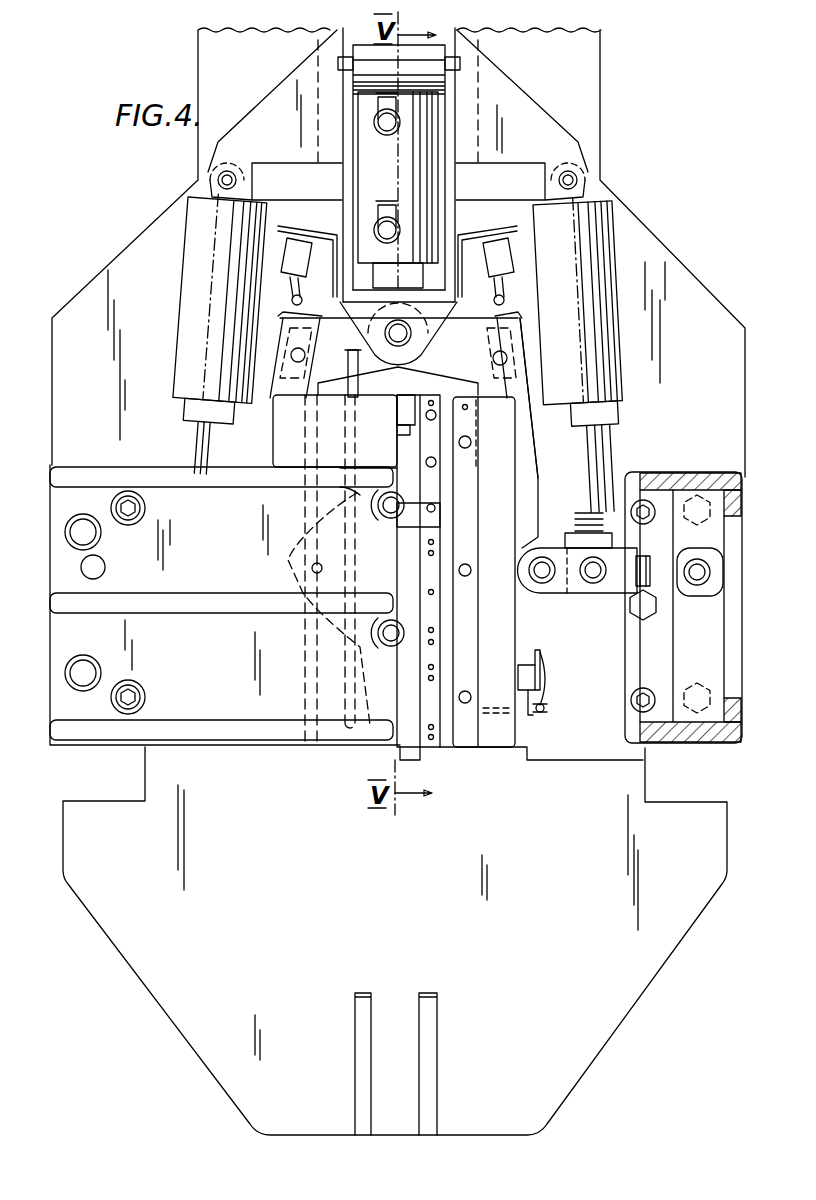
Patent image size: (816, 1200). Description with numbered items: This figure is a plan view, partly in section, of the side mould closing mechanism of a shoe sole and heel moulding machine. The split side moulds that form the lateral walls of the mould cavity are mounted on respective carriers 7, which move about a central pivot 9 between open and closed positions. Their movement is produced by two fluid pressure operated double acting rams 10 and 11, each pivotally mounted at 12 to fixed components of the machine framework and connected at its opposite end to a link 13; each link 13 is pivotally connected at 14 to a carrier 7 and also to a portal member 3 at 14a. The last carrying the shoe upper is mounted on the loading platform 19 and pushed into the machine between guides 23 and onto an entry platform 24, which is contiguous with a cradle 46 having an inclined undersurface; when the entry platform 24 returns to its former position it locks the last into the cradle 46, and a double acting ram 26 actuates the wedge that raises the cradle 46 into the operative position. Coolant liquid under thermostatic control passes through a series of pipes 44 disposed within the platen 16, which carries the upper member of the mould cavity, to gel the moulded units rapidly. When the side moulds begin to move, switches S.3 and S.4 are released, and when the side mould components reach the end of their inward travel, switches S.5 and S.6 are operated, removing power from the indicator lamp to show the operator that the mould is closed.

The portal member 3 is at (110, 476).
The carrier 7 is at (280, 461).
The pivot 9 is at (412, 333).
The double acting ram 10 is at (202, 250).
The double acting ram 11 is at (572, 255).
The ram pivot mounting 12 is at (228, 180).
The link 13 is at (571, 585).
The carrier pivot connection 14 is at (542, 583).
The portal member pivot connection 14a is at (698, 585).
The platen 16 is at (330, 440).
The loading platform 19 is at (410, 906).
The guide 23 is at (463, 733).
The entry platform 24 is at (433, 712).
The double acting ram 26 is at (373, 183).
The pipe 44 is at (369, 388).
The cradle 46 is at (541, 660).
The switch S.3 is at (312, 232).
The switch S.4 is at (490, 250).
The switch S.5 is at (280, 308).
The switch S.6 is at (510, 316).